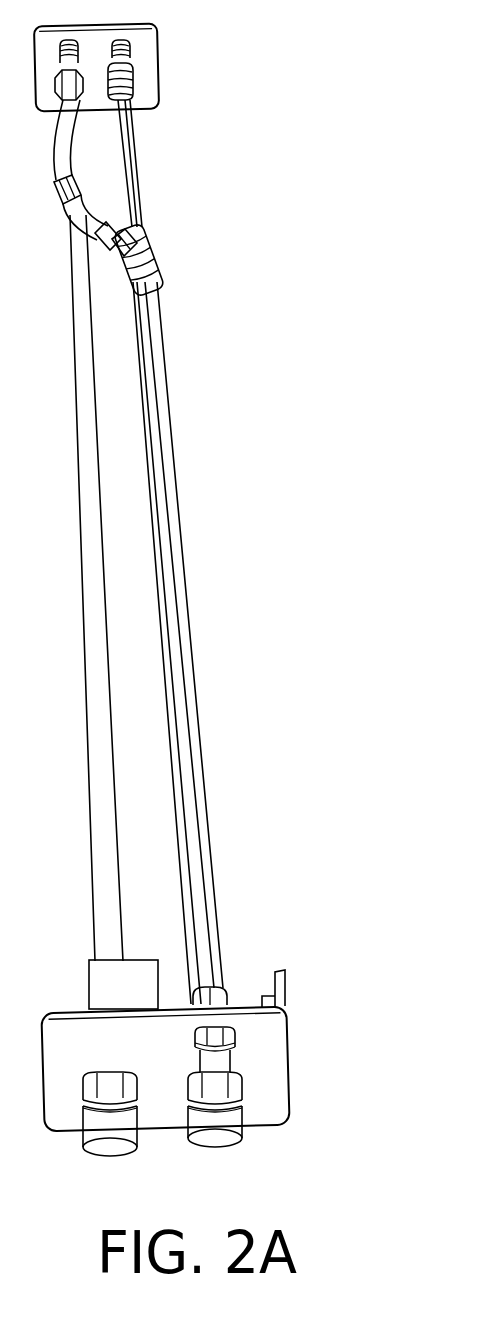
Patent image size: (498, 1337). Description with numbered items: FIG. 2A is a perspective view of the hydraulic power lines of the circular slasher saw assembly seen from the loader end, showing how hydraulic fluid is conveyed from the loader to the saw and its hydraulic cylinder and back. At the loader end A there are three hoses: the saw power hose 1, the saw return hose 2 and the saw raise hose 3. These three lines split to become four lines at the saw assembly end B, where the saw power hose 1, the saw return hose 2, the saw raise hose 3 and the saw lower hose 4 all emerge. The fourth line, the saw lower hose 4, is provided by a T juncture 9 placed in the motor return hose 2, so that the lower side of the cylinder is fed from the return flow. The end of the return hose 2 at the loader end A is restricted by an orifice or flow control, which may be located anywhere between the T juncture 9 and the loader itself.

The saw power hose/line 1 is at (112, 1150).
The saw return hose/line 2 is at (243, 1120).
The saw raise hose/line 3 is at (230, 993).
The saw lower hose/line 4 is at (100, 218).
The T juncture 9 is at (160, 257).
The loader end A is at (324, 1026).
The saw assembly end B is at (200, 50).